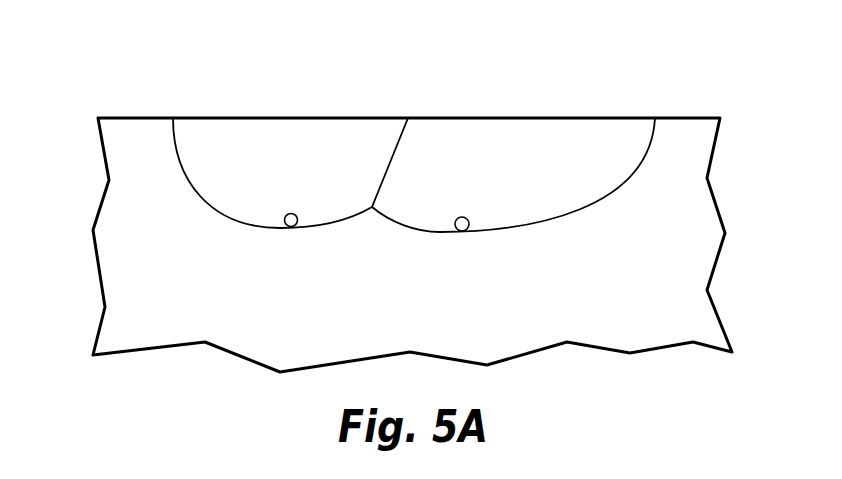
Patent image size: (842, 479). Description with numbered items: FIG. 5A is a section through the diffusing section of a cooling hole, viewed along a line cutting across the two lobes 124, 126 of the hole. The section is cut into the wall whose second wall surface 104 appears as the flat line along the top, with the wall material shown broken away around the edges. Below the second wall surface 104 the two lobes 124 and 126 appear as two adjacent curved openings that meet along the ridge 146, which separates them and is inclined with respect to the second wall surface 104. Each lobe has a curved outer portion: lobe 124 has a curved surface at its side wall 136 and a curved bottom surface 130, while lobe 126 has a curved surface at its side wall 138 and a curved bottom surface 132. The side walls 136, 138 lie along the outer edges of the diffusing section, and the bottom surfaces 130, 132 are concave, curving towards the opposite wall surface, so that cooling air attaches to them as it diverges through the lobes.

The second wall surface 104 is at (123, 117).
The lobe 124 is at (272, 173).
The lobe 126 is at (513, 175).
The bottom surface 130 is at (297, 224).
The bottom surface 132 is at (468, 230).
The side wall 136 is at (177, 147).
The side wall 138 is at (648, 147).
The ridge 146 is at (390, 155).